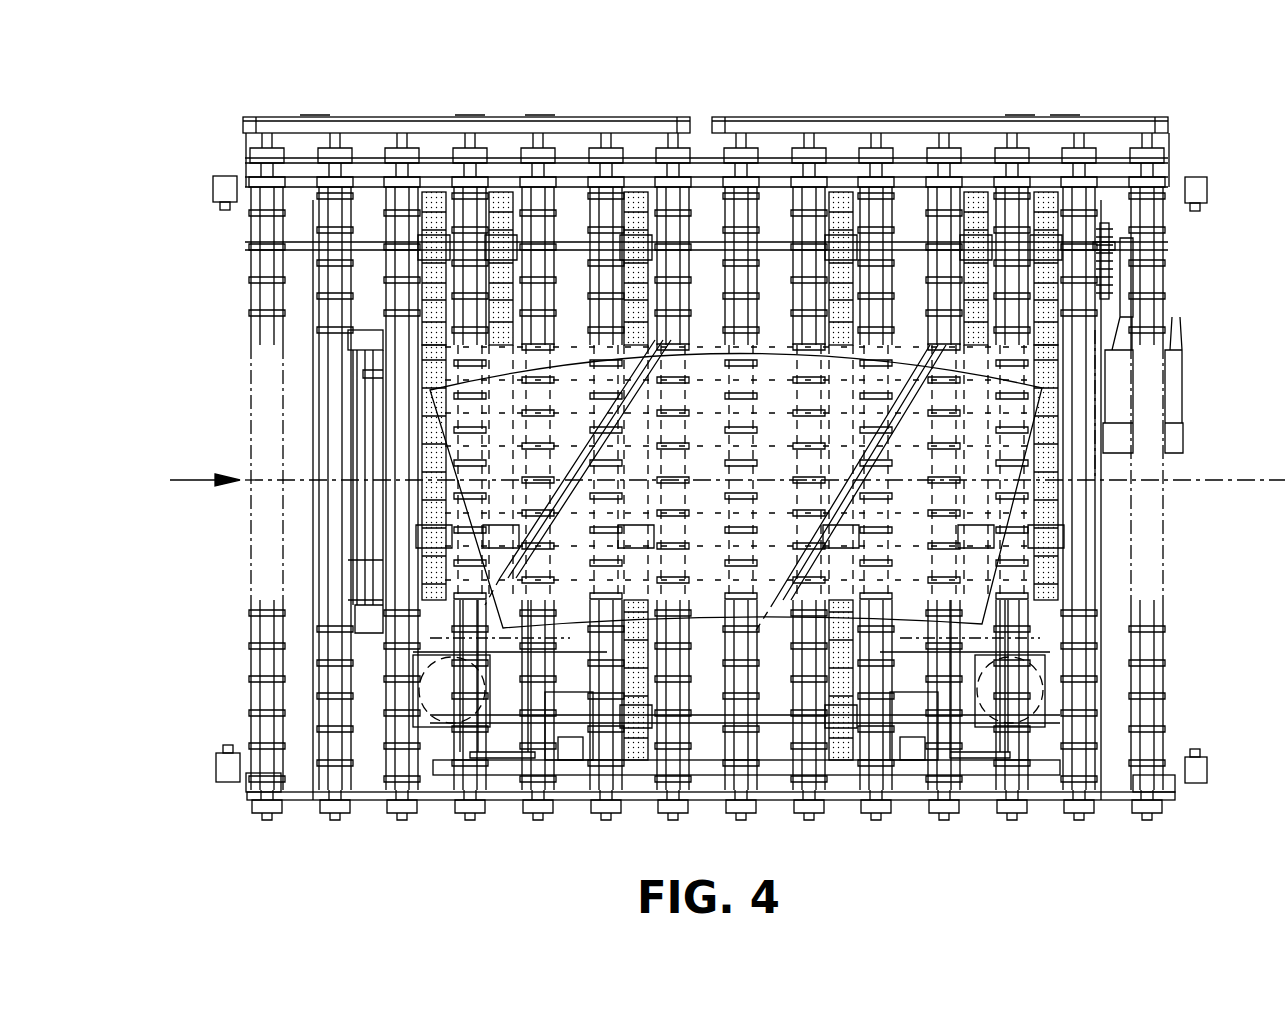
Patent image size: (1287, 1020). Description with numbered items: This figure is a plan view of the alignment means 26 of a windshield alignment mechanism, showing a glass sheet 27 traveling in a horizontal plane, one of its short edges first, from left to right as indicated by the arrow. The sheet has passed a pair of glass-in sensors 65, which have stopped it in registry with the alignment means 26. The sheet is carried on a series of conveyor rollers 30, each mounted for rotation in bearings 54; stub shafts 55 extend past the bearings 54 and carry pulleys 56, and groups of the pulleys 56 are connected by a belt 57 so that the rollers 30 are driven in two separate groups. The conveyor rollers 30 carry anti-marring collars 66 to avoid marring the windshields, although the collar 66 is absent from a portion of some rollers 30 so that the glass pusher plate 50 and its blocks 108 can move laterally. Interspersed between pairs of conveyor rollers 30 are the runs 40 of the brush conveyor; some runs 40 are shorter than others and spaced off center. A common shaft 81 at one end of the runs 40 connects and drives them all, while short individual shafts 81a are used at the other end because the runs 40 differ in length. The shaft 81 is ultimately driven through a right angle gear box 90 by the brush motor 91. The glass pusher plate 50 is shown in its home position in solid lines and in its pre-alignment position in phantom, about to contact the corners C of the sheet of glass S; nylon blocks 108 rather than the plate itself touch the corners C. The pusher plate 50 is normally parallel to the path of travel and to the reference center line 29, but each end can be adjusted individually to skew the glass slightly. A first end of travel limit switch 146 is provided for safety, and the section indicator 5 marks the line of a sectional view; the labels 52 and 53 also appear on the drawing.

The section line 5- 5 is at (222, 112).
The alignment means 26 is at (833, 772).
The glass sheet 27 is at (783, 332).
The center line 29 is at (1228, 480).
The conveyor rollers 30 is at (262, 300).
The conveyor run 40 is at (840, 195).
The glass pusher plate 50 is at (768, 645).
The sheet lower portion 52 is at (880, 640).
The sheet guide lines 53 is at (585, 418).
The bearings 54 is at (258, 150).
The stub shafts 55 is at (300, 137).
The pulleys 56 is at (265, 118).
The belt 57 is at (568, 117).
The glass-in sensors 65 is at (225, 195).
The anti-marring collars 66 is at (262, 650).
The shaft 81 is at (590, 250).
The short individual shafts 81a is at (420, 537).
The right angle gear box 90 is at (1112, 272).
The brush motor 91 is at (1178, 380).
The nylon blocks 108 is at (488, 625).
The first end of travel limit switch 146 is at (1197, 193).
The sheet of glass S is at (787, 444).
The corners C is at (508, 625).